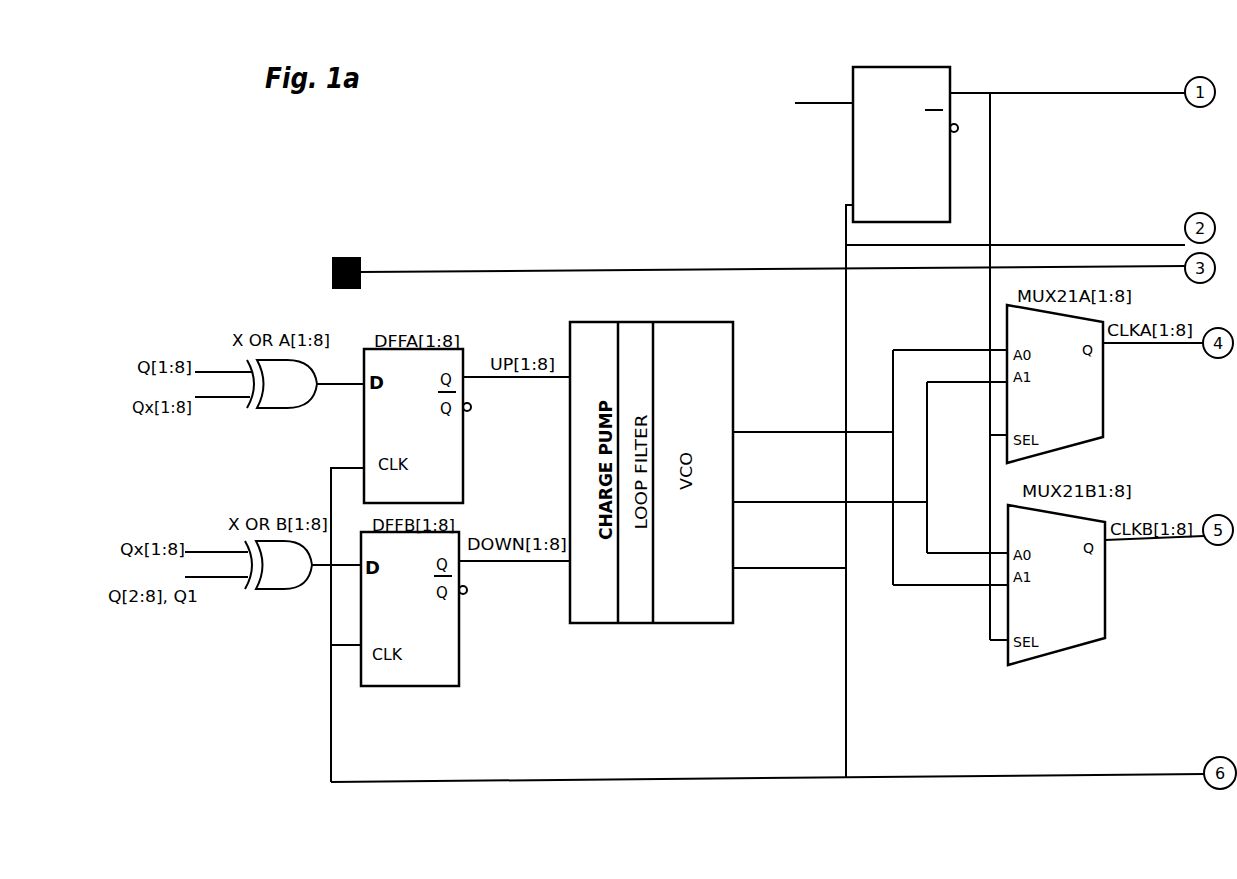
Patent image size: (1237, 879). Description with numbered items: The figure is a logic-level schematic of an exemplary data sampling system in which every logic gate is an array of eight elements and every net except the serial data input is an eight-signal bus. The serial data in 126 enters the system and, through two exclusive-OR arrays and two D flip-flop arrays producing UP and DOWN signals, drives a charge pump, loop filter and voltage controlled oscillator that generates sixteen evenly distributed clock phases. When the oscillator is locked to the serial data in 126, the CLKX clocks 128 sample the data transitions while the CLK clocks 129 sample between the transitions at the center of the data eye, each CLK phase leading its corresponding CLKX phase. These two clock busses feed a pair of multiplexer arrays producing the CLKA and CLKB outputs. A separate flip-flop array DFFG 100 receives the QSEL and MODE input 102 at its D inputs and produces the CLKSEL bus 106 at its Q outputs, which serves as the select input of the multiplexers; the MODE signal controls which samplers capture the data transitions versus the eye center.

The DFFG[1:8] 100 is at (891, 44).
The QSEL[2:8], MODE input 102 is at (683, 87).
The CLKSEL[1:8] 106 is at (1071, 78).
The SERIAL DATA IN 126 is at (217, 255).
The CLKX[1:8] 128 is at (802, 513).
The CLK[1:8] 129 is at (766, 388).